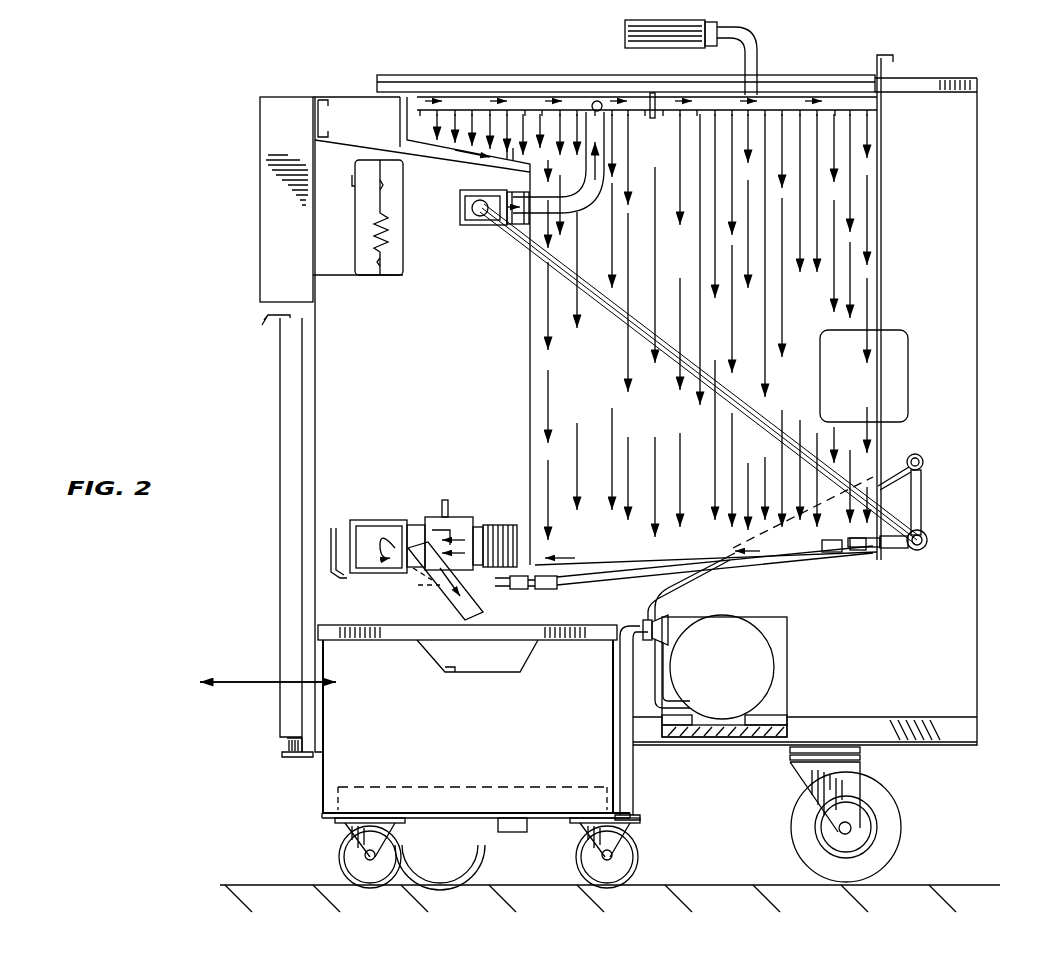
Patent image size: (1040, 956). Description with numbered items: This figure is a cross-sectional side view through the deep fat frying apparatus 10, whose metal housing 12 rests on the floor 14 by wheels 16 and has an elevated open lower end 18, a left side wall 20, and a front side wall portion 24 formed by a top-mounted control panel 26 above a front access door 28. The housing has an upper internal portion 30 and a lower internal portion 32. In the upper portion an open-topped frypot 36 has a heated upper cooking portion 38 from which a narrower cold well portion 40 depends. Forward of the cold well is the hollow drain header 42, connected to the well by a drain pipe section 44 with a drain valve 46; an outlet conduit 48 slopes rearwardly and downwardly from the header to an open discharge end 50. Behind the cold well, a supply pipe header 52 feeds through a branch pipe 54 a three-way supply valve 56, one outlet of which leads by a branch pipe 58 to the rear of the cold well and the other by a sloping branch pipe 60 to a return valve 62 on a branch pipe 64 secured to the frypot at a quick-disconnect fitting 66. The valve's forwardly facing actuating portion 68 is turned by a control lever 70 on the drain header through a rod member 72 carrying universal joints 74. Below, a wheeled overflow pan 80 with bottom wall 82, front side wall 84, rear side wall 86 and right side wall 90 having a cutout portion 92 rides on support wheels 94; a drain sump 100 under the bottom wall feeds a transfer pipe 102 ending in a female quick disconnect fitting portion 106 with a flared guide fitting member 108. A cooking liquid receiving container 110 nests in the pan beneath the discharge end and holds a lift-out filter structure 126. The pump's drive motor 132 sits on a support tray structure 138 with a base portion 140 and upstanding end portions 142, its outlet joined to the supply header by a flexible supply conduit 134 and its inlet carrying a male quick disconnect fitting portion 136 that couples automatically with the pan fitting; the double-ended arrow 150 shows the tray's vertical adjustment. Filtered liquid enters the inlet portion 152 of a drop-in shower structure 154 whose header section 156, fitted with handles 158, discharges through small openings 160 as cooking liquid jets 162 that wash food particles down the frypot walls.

The deep fat frying apparatus 10 is at (197, 86).
The metal housing 12 is at (982, 152).
The floor 14 is at (250, 885).
The wheels 16 is at (892, 830).
The open lower end 18 is at (918, 748).
The left side wall 20 is at (927, 241).
The front side wall portion 24 is at (273, 406).
The control panels 26 is at (268, 192).
The front access doors 28 is at (288, 508).
The upper internal portion 30 is at (972, 205).
The lower internal portion 32 is at (975, 645).
The frypot 36 is at (882, 163).
The upper cooking portion 38 is at (882, 138).
The cold well portion 40 is at (892, 425).
The drain header 42 is at (380, 520).
The drain pipe section 44 is at (520, 525).
The drain valve 46 is at (460, 517).
The outlet conduit 48 is at (425, 585).
The open discharge end 50 is at (470, 640).
The supply pipe header 52 is at (922, 458).
The branch pipe 54 is at (922, 500).
The three-way supply valve 56 is at (927, 548).
The branch pipe 58 is at (893, 550).
The branch pipe 60 is at (640, 330).
The return valve 62 is at (468, 190).
The branch pipe 64 is at (520, 192).
The quick-disconnect fitting 66 is at (565, 215).
The actuating portion 68 is at (865, 550).
The control lever 70 is at (327, 543).
The rod member 72 is at (485, 590).
The universal joints 74 is at (532, 592).
The overflow pan 80 is at (322, 778).
The bottom wall 82 is at (440, 818).
The front side wall 84 is at (322, 798).
The rear side wall 86 is at (634, 770).
The right side wall 90 is at (474, 719).
The central cutout portion 92 is at (440, 668).
The support wheels 94 is at (342, 857).
The drain sump 100 is at (510, 832).
The transfer pipe 102 is at (634, 790).
The female quick disconnect fitting portion 106 is at (740, 610).
The flared guide fitting member 108 is at (668, 612).
The cooking liquid receiving container 110 is at (525, 665).
The filter structure 126 is at (540, 787).
The drive motor 132 is at (775, 667).
The flexible supply conduit 134 is at (728, 560).
The male quick disconnect fitting portion 136 is at (680, 632).
The support tray structure 138 is at (795, 690).
The base portion 140 is at (730, 740).
The upstanding end portions 142 is at (787, 640).
The double-ended arrow 150 is at (517, 540).
The inlet portion 152 is at (608, 150).
The cooking fluid shower structure 154 is at (418, 97).
The header section 156 is at (470, 97).
The handles 158 is at (712, 20).
The discharge openings 160 is at (420, 124).
The cooking liquid jets 162 is at (762, 135).